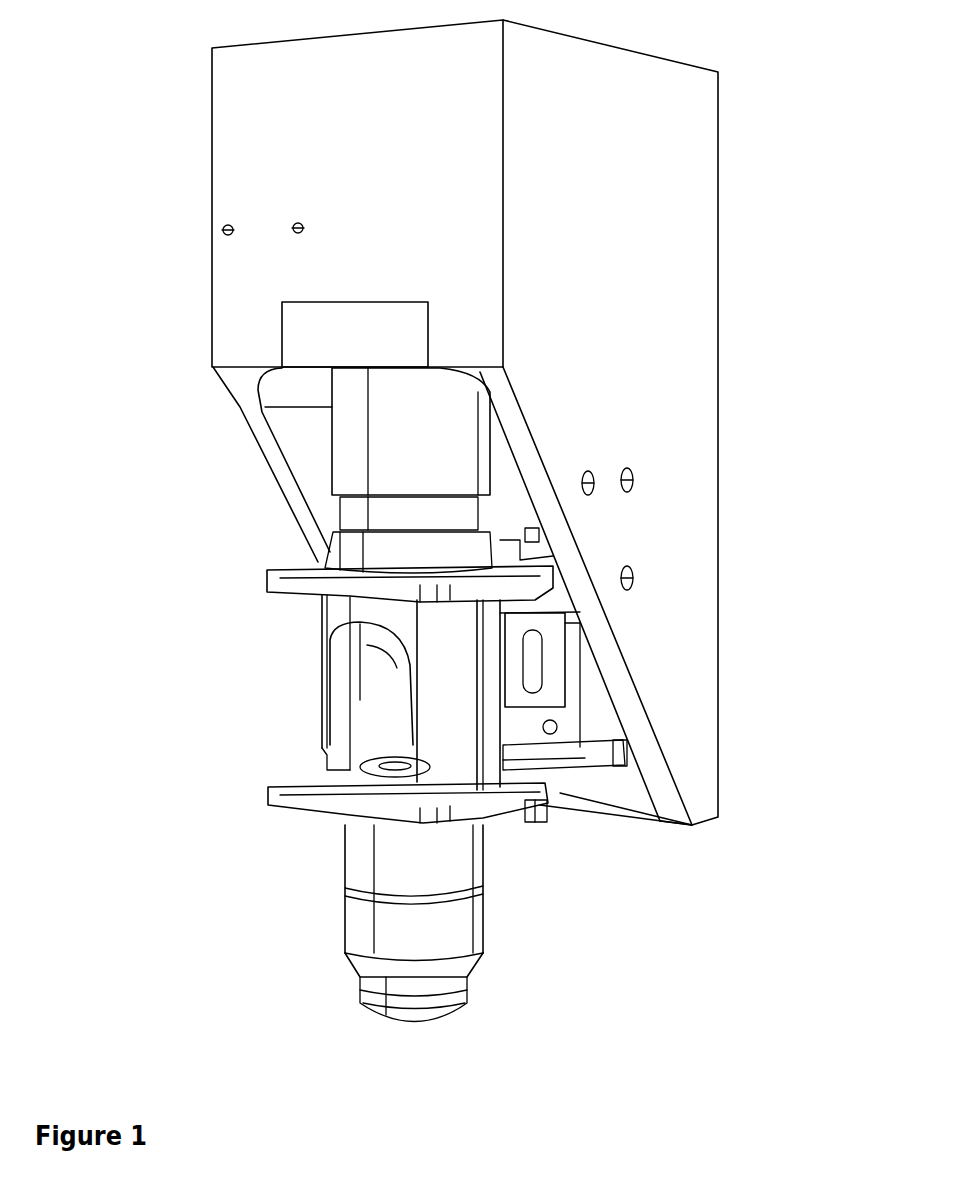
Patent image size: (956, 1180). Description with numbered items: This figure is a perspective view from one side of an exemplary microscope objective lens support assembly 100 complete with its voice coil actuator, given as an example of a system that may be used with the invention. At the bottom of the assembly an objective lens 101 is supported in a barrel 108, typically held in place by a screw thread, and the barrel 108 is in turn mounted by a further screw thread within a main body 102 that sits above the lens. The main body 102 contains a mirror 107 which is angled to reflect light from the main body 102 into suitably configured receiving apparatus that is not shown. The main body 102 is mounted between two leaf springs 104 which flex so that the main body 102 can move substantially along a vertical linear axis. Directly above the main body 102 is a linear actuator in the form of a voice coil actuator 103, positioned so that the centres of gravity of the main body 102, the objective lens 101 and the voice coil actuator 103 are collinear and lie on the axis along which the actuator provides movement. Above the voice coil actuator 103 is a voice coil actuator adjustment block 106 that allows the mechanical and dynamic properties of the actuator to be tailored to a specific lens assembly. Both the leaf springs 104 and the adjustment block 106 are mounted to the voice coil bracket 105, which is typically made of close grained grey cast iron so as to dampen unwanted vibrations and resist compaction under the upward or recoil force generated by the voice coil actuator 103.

The objective lens support assembly 100 is at (864, 44).
The objective lens 101 is at (355, 997).
The main body 102 is at (291, 694).
The voice coil actuator 103 is at (345, 440).
The leaf springs 104 is at (531, 581).
The voice coil bracket 105 is at (663, 277).
The voice coil actuator adjustment block 106 is at (340, 333).
The mirror 107 is at (390, 655).
The barrel 108 is at (458, 923).